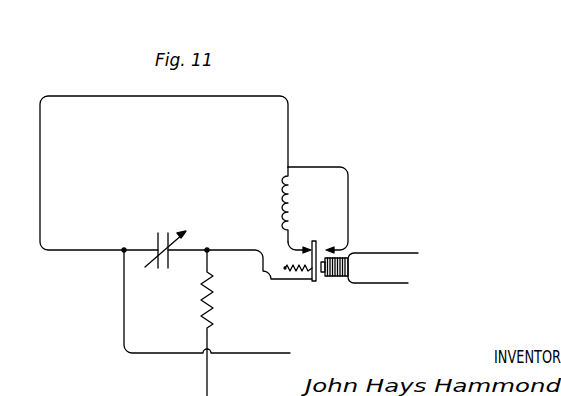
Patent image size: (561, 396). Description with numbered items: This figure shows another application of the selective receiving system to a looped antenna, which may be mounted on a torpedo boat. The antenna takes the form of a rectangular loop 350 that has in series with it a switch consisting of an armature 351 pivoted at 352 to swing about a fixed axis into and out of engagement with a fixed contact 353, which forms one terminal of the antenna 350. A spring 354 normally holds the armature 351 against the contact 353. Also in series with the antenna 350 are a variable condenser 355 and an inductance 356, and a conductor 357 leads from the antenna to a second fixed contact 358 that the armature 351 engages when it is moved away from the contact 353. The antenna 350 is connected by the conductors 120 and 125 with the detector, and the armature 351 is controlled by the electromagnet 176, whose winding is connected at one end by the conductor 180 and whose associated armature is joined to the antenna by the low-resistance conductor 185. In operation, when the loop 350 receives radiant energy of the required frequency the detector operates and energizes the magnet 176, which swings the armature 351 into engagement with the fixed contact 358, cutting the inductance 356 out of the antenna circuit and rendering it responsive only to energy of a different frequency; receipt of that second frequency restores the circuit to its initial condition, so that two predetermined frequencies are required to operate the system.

The rectangular loop antenna 350 is at (289, 121).
The conductor 357 is at (349, 180).
The inductance 356 is at (281, 200).
The fixed contact 353 is at (313, 242).
The fixed contact 358 is at (330, 248).
The pivot 352 is at (312, 281).
The armature 351 is at (316, 278).
The spring 354 is at (293, 269).
The variable condenser 355 is at (163, 237).
The conductor 125 is at (123, 298).
The conductor 120 is at (209, 266).
The electromagnet 176 is at (348, 267).
The conductor 180 is at (392, 258).
The conductor 185 is at (408, 283).